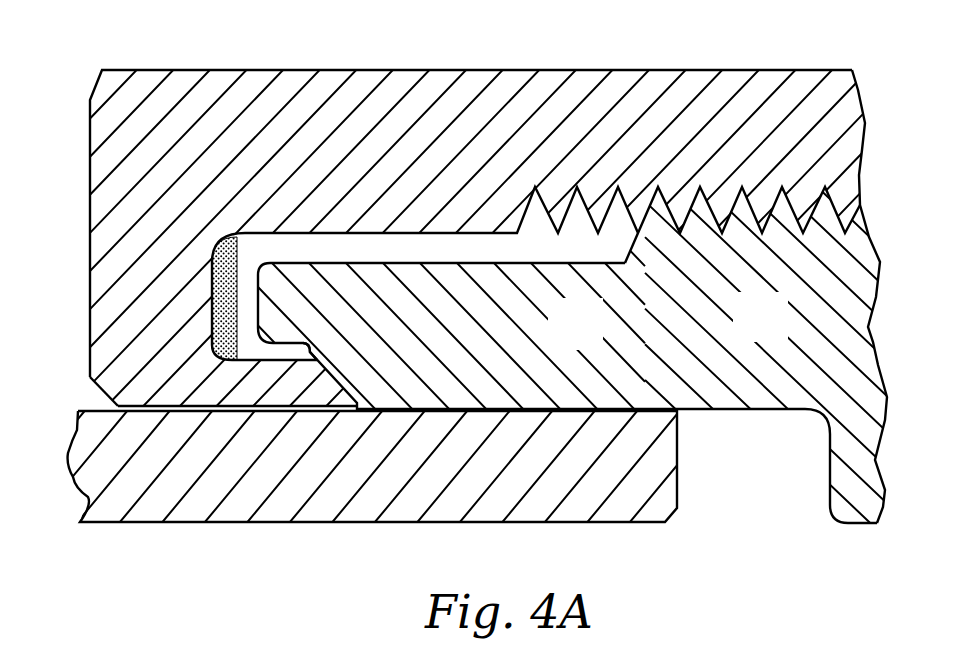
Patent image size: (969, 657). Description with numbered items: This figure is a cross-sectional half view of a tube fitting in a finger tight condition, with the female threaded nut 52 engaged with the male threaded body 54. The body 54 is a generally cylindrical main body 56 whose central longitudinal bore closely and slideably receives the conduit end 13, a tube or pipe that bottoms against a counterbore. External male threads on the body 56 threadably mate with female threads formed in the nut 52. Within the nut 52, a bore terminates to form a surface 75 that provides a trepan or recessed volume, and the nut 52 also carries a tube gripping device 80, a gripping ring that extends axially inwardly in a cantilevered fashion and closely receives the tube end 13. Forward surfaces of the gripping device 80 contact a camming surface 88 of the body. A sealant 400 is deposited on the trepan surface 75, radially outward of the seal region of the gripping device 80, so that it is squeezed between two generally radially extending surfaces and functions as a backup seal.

The female threaded nut 52 is at (248, 63).
The male threaded body 54 is at (780, 337).
The main body 56 is at (596, 341).
The surface 75 is at (212, 328).
The sealant 400 is at (212, 284).
The camming surface 88 is at (312, 350).
The tube gripping device 80 is at (318, 420).
The conduit end 13 is at (677, 473).